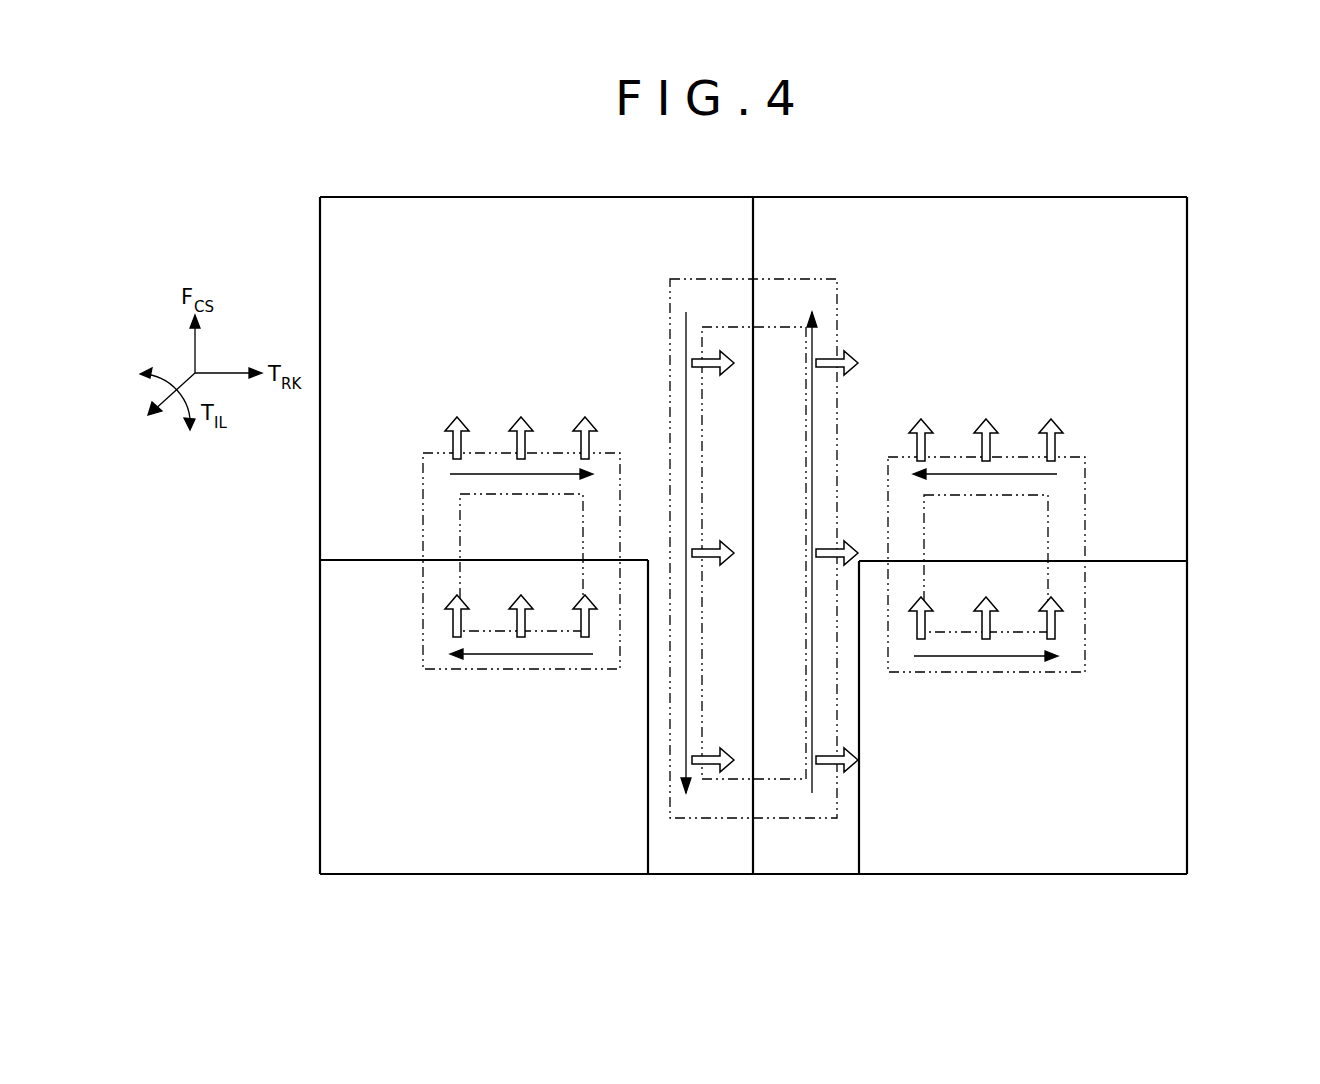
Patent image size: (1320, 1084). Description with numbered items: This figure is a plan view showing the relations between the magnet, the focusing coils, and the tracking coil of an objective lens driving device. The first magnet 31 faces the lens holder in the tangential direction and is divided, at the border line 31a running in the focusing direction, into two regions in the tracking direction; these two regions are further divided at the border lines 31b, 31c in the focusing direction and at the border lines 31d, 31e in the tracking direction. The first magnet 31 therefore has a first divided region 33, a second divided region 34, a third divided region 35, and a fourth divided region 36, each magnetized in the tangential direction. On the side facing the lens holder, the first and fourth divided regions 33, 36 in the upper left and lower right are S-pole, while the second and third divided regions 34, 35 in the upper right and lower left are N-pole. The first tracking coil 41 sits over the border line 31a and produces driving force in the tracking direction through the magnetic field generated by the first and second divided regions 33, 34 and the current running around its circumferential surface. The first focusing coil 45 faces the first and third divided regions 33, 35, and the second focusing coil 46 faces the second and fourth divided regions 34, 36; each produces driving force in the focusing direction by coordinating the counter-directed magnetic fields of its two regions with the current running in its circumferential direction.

The first magnet 31 is at (893, 190).
The border line 31a is at (755, 250).
The border line 31b is at (648, 838).
The border line 31c is at (858, 845).
The border line 31d is at (358, 560).
The border line 31e is at (1150, 560).
The first divided region 33 is at (333, 257).
The second divided region 34 is at (1155, 222).
The third divided region 35 is at (363, 840).
The fourth divided region 36 is at (1163, 797).
The first tracking coil 41 is at (710, 300).
The first focusing coil 45 is at (423, 483).
The second focusing coil 46 is at (1085, 483).